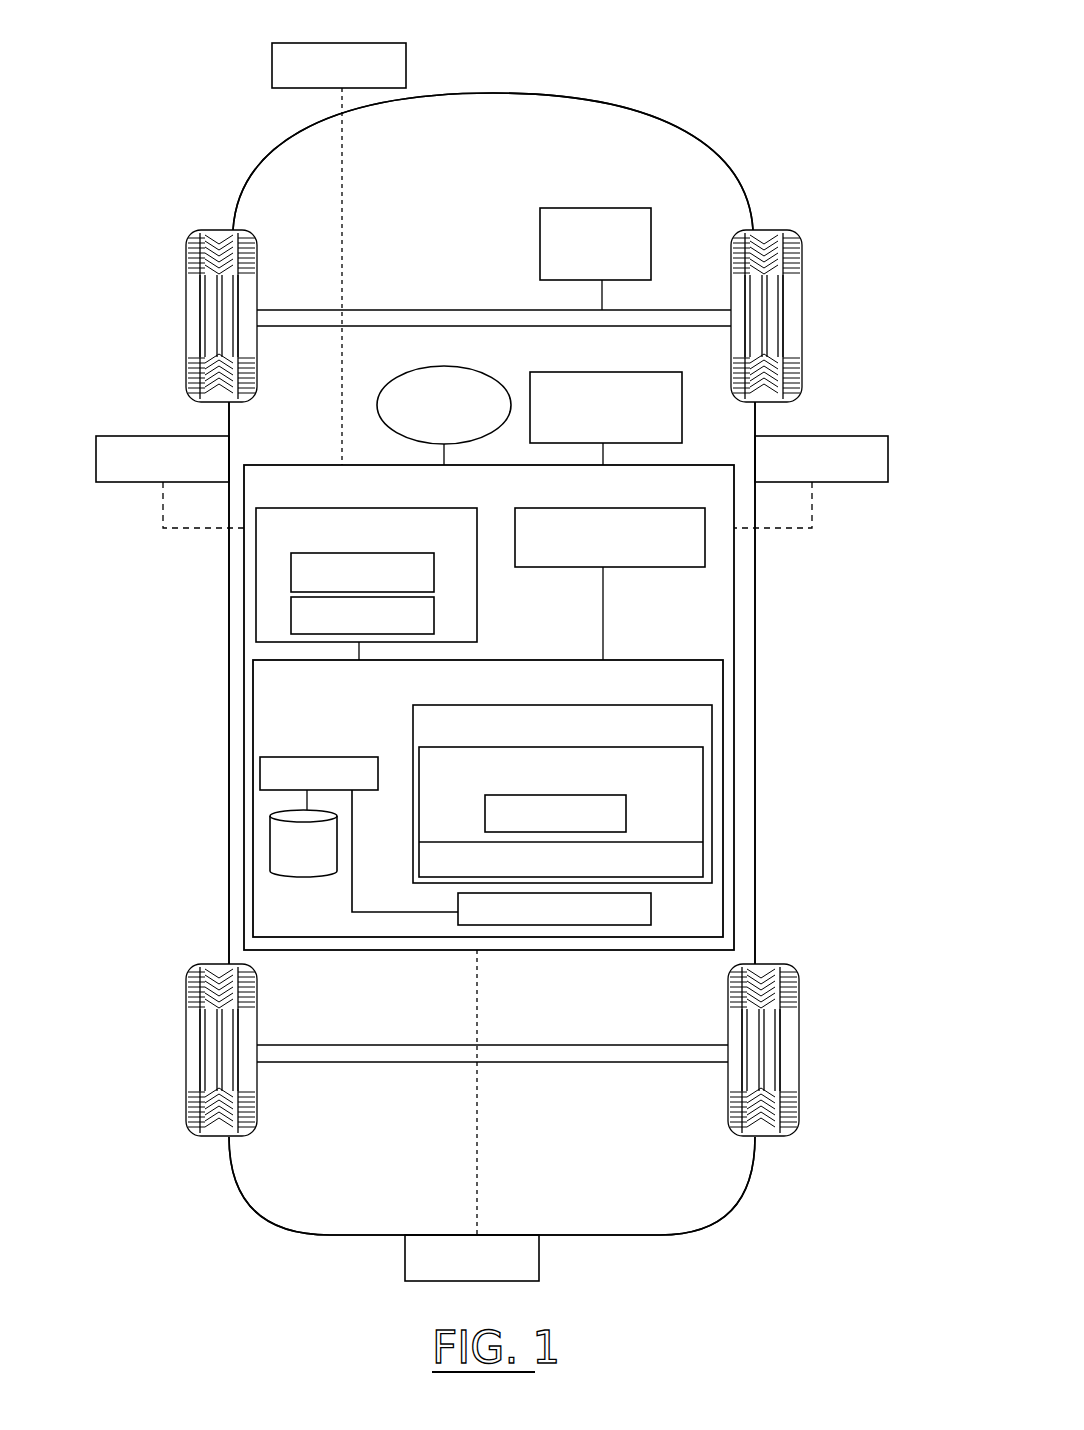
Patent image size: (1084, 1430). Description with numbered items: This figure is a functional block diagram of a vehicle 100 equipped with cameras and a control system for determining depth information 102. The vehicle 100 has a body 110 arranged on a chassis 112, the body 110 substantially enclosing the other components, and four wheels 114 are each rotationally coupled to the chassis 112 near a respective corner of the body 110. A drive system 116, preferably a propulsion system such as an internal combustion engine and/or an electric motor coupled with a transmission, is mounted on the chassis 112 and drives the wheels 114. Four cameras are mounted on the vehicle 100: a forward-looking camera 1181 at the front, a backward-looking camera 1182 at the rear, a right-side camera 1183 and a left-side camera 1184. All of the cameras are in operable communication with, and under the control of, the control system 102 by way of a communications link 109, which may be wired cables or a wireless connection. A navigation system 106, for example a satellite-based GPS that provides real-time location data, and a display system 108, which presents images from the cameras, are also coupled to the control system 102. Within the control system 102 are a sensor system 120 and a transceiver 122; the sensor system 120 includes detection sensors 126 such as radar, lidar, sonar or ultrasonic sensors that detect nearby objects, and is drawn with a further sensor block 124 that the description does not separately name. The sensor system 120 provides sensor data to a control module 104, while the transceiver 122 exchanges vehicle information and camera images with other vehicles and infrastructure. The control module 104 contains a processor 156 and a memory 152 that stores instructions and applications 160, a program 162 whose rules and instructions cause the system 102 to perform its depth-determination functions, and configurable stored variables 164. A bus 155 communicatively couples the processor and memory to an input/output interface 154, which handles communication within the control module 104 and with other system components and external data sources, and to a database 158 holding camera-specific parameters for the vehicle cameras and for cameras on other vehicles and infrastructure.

The vehicle 100 is at (713, 88).
The control system for determining depth information 102 is at (489, 707).
The control module 104 is at (488, 798).
The navigation system 106 is at (603, 372).
The display system 108 is at (395, 372).
The communications link 109 is at (342, 175).
The body 110 is at (737, 617).
The chassis 112 is at (324, 282).
The wheels 114 is at (208, 230).
The drive system 116 is at (540, 246).
The sensor system 120 is at (477, 618).
The transceiver 122 is at (623, 567).
The instructions 124 is at (291, 572).
The detection sensors 126 is at (291, 612).
The memory 152 is at (692, 702).
The I/O interface 154 is at (651, 905).
The bus 155 is at (360, 906).
The processor 156 is at (295, 757).
The database 158 is at (270, 832).
The instructions and applications 160 is at (683, 746).
The program 162 is at (626, 810).
The stored variables 164 is at (703, 842).
The forward-looking camera 1181 is at (272, 60).
The backward-looking camera 1182 is at (539, 1250).
The right-side camera 1183 is at (850, 436).
The left-side camera 1184 is at (125, 436).